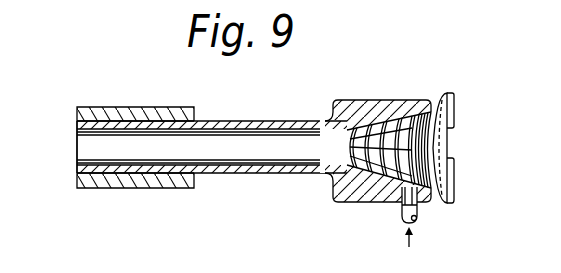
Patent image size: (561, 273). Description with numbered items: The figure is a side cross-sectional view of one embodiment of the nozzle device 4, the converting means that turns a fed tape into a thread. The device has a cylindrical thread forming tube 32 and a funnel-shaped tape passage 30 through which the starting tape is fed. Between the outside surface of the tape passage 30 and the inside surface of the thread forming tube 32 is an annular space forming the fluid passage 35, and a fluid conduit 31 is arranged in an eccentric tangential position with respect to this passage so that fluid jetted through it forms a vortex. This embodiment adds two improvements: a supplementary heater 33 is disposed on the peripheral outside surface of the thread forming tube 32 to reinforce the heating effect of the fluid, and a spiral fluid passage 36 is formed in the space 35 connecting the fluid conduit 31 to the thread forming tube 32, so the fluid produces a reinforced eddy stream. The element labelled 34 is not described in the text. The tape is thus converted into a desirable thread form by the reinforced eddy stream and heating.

The nozzle device 4 is at (272, 91).
The tape passage 30 is at (410, 122).
The fluid conduit 31 is at (417, 214).
The thread forming tube 32 is at (218, 172).
The supplementary heater 33 is at (133, 114).
The inlet end 34 is at (77, 146).
The fluid passage 35 is at (372, 176).
The spiral fluid passage 36 is at (386, 124).